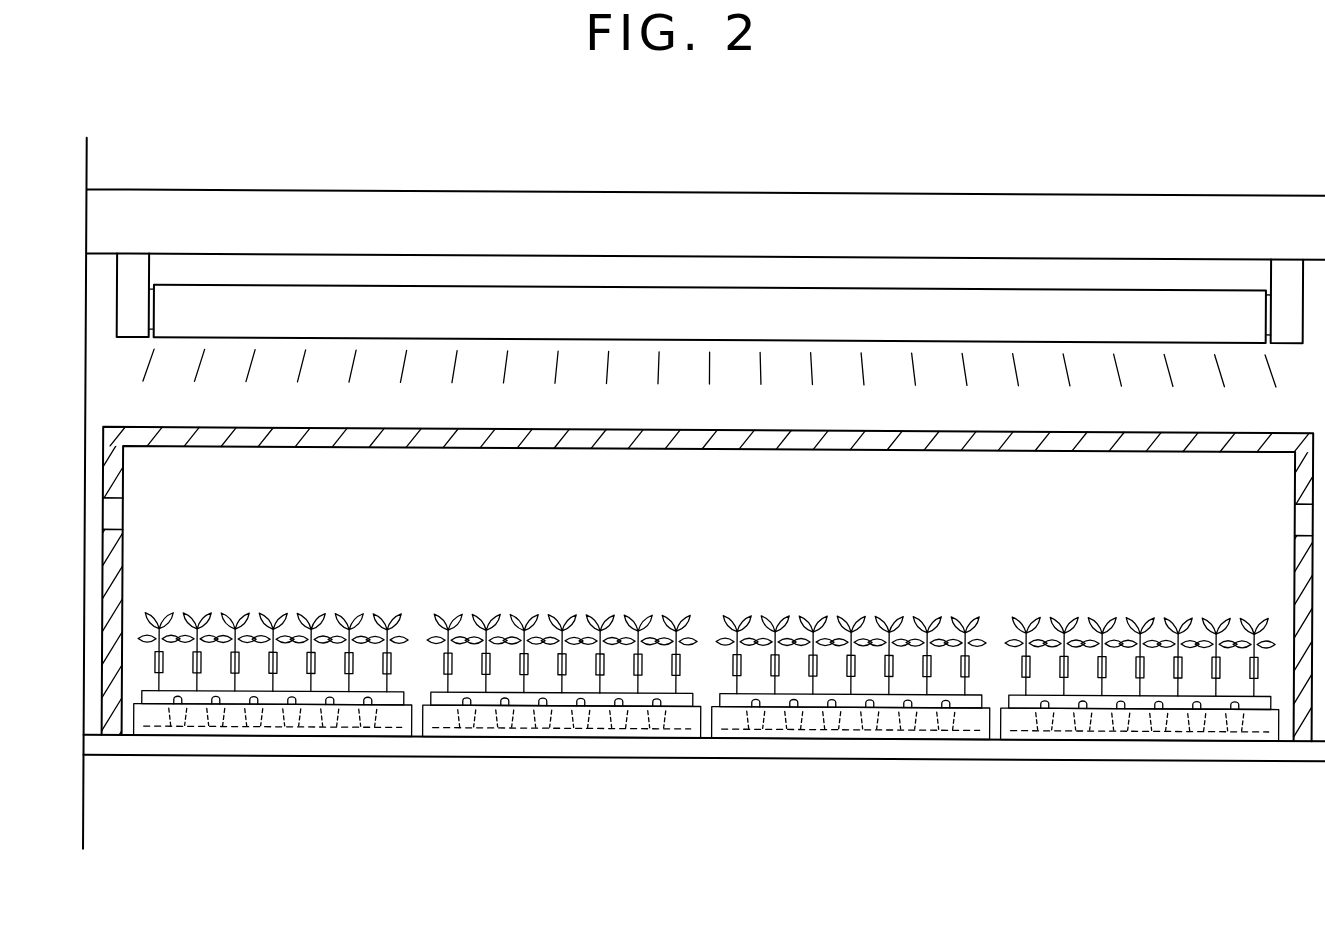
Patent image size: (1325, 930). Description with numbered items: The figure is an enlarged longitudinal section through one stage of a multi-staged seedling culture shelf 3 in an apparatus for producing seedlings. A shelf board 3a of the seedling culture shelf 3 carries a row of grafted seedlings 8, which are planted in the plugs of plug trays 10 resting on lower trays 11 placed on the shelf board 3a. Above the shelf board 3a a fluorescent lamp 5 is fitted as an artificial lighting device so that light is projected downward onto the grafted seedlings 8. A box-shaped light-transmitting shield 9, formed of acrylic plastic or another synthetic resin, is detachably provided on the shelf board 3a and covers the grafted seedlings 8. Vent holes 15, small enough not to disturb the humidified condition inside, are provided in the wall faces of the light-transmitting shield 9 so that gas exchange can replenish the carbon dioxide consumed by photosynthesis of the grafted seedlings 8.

The seedling culture shelf 3 is at (1255, 170).
The shelf board 3a is at (995, 759).
The fluorescent lamp 5 is at (1100, 312).
The grafted seedlings 8 is at (236, 627).
The light-transmitting shield 9 is at (1150, 432).
The plug tray 10 is at (233, 703).
The lower tray 11 is at (365, 718).
The vent hole 15 is at (114, 515).